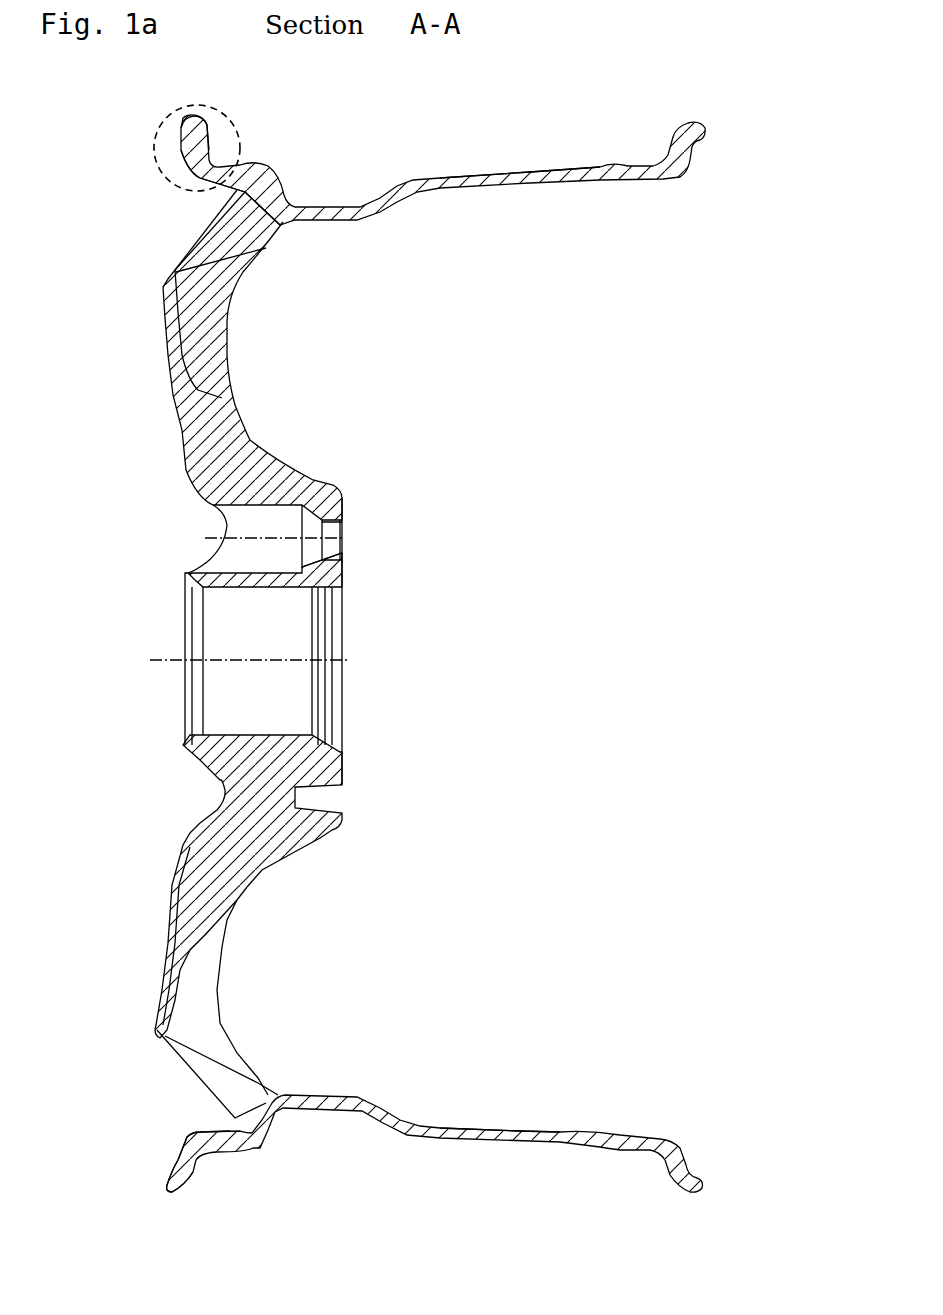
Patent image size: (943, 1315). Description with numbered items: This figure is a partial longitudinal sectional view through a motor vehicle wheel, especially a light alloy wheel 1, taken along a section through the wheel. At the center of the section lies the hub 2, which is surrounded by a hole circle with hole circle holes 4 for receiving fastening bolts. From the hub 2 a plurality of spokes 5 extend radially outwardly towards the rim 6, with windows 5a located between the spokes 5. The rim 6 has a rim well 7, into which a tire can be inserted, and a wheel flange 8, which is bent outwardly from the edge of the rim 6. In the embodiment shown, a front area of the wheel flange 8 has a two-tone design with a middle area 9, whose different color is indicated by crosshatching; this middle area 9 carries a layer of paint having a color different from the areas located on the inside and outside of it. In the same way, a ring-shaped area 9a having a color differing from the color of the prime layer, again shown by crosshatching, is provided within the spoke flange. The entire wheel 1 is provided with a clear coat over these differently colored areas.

The light alloy wheel 1 is at (668, 311).
The hub 2 is at (223, 722).
The hole circle holes 4 is at (312, 528).
The spokes 5 is at (225, 460).
The windows 5a is at (205, 1077).
The rim 6 is at (373, 128).
The rim well 7 is at (478, 176).
The wheel flange 8 is at (193, 133).
The middle area 9 is at (196, 160).
The ring-shaped area 9a is at (160, 335).